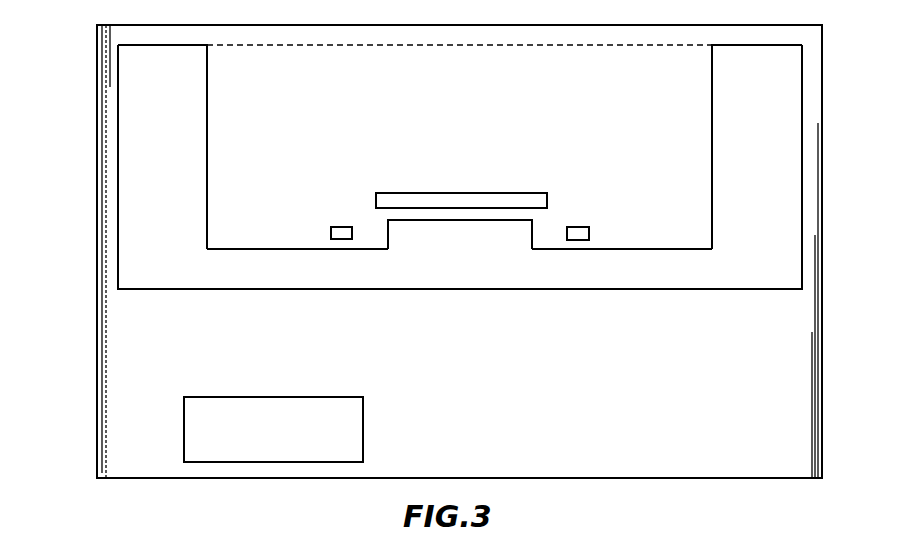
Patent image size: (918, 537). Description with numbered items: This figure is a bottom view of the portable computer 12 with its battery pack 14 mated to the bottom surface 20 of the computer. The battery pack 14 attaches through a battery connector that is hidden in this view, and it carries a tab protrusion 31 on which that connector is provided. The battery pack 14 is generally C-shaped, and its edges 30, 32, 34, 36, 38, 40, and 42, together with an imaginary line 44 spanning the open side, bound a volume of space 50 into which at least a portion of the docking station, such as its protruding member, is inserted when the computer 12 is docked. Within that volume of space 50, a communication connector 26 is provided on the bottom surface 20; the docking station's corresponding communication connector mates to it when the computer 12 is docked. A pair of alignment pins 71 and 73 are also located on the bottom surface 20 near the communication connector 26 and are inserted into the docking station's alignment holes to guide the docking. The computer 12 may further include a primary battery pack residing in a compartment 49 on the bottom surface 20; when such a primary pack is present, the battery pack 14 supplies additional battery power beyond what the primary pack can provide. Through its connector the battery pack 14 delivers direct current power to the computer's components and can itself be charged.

The computer 12 is at (97, 162).
The battery pack 14 is at (118, 221).
The bottom surface 20 is at (127, 412).
The communication connector 26 is at (547, 193).
The edge 30 is at (388, 237).
The tab protrusion 31 is at (474, 248).
The edge 32 is at (493, 220).
The edge 34 is at (532, 237).
The edge 36 is at (223, 248).
The edge 38 is at (642, 248).
The edge 40 is at (207, 126).
The edge 42 is at (712, 134).
The imaginary line 44 is at (557, 45).
The compartment 49 is at (363, 423).
The volume of space 50 is at (483, 144).
The alignment pin 71 is at (337, 227).
The alignment pin 73 is at (582, 227).